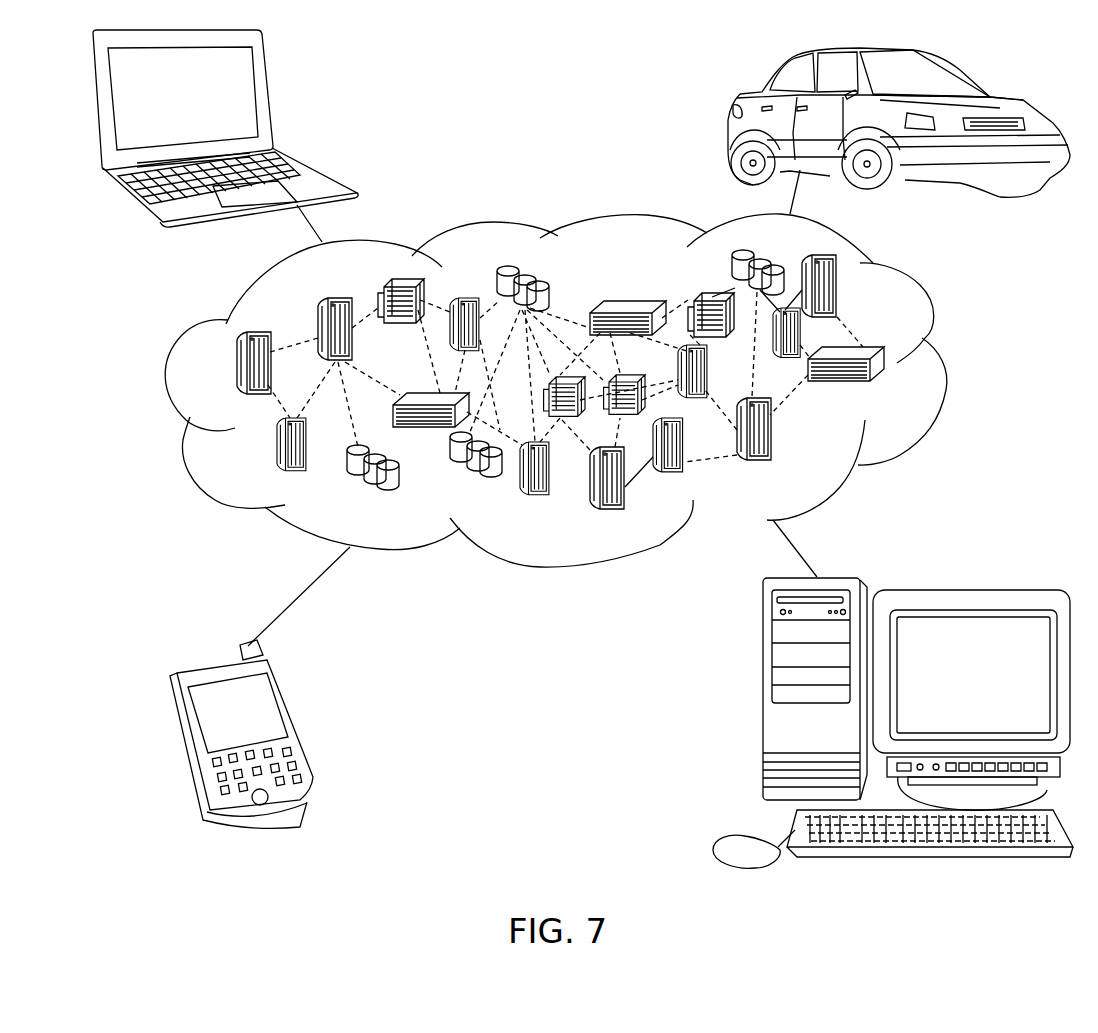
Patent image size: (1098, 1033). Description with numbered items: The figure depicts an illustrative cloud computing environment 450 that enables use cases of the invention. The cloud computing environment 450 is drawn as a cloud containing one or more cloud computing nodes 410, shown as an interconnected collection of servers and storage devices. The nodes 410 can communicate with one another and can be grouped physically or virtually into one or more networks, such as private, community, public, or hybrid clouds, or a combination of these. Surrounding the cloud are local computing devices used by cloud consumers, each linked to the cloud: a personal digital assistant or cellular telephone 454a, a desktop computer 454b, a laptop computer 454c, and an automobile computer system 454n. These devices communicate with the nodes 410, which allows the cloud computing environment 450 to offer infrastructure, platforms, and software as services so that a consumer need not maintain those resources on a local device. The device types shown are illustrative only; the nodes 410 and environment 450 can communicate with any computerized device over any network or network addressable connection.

The cloud computing nodes 410 is at (902, 385).
The cloud computing environment 450 is at (930, 302).
The personal digital assistant (PDA) or cellular telephone 454a is at (293, 710).
The desktop computer 454b is at (762, 705).
The laptop computer 454c is at (271, 87).
The automobile computer system 454n is at (737, 98).